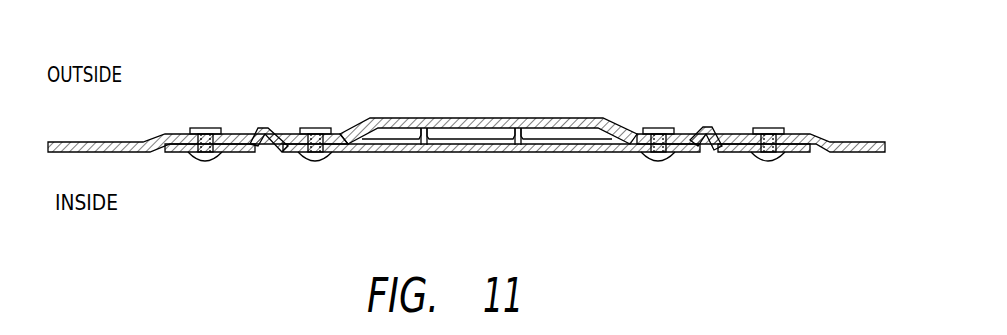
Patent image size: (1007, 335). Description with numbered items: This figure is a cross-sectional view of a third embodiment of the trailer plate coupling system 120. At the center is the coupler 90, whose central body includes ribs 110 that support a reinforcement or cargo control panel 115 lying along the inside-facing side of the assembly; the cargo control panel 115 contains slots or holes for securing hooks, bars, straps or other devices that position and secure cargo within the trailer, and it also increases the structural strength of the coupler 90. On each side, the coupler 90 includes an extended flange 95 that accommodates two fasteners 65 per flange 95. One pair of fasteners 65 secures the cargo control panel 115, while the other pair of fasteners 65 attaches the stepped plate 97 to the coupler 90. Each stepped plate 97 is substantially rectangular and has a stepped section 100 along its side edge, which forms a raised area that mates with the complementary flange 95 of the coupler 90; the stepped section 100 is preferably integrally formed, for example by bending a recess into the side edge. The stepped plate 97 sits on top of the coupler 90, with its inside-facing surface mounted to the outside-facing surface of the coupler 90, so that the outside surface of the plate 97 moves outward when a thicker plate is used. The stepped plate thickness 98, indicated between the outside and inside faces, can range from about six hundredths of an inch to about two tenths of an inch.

The fastener 65 is at (202, 164).
The coupler 90 is at (488, 108).
The extended flange 95 is at (252, 157).
The stepped plate 97 is at (108, 142).
The stepped plate thickness 98 is at (78, 180).
The stepped section 100 is at (828, 133).
The ribs 110 is at (428, 141).
The cargo control panel 115 is at (482, 152).
The trailer plate coupling system 120 is at (650, 76).